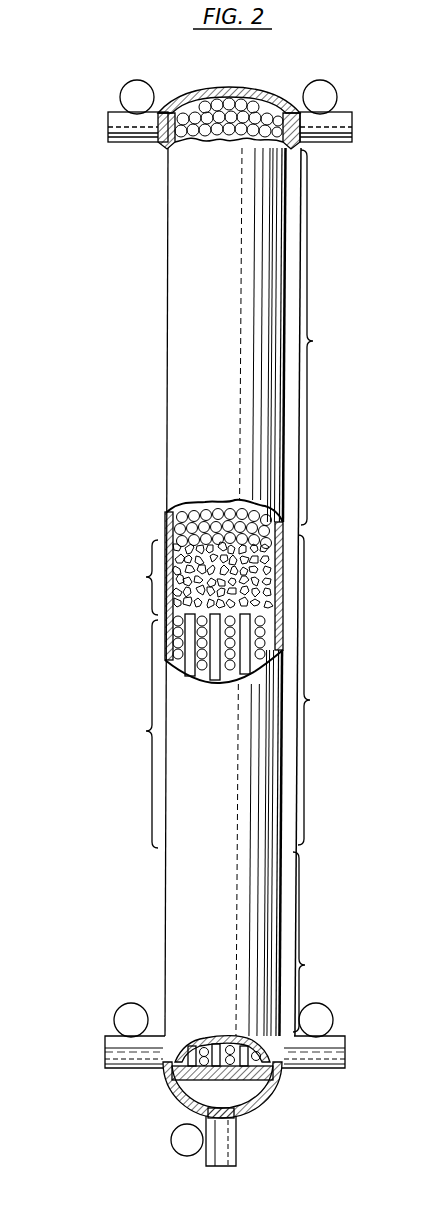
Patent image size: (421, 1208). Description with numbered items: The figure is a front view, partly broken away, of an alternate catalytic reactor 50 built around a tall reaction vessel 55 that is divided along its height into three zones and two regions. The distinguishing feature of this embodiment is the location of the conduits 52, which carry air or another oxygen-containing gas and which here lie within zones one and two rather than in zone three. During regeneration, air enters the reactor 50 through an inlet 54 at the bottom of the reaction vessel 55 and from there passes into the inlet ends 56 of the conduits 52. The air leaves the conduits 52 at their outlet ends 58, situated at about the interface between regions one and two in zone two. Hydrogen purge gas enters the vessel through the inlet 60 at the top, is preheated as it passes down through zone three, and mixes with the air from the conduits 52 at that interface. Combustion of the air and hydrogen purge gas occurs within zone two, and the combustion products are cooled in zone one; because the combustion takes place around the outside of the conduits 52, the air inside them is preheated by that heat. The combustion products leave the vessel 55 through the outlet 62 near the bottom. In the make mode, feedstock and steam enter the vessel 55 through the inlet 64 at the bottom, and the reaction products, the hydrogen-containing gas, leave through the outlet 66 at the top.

The reactor 50 is at (137, 374).
The conduits 52 is at (244, 673).
The inlet 54 is at (230, 1112).
The reaction vessel 55 is at (284, 760).
The inlet ends 56 is at (250, 1080).
The outlet ends 58 is at (262, 619).
The inlet 60 is at (290, 125).
The outlet 62 is at (306, 1054).
The inlet 64 is at (134, 1052).
The outlet 66 is at (167, 125).